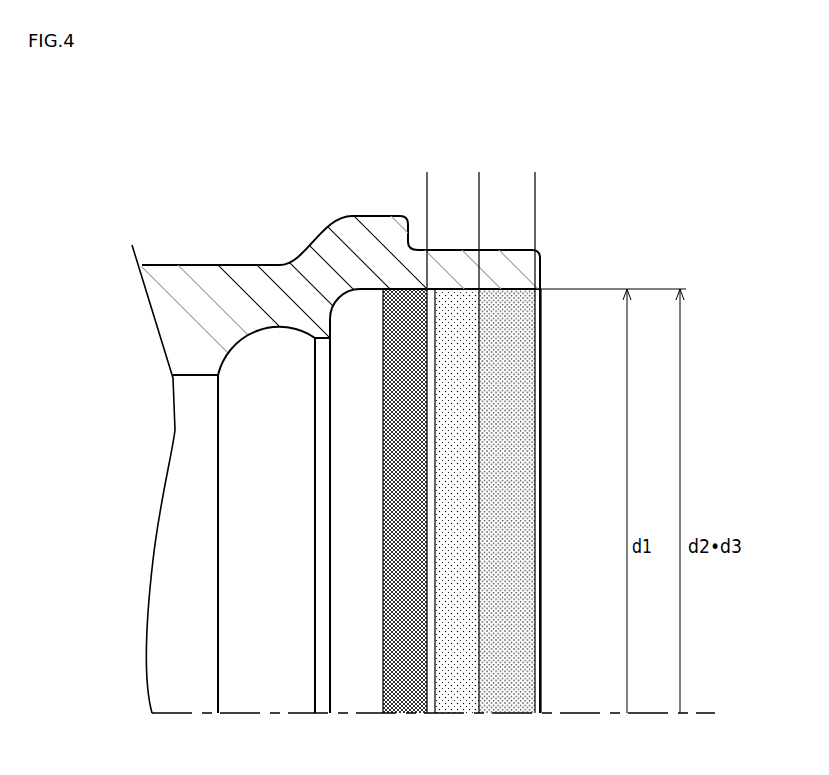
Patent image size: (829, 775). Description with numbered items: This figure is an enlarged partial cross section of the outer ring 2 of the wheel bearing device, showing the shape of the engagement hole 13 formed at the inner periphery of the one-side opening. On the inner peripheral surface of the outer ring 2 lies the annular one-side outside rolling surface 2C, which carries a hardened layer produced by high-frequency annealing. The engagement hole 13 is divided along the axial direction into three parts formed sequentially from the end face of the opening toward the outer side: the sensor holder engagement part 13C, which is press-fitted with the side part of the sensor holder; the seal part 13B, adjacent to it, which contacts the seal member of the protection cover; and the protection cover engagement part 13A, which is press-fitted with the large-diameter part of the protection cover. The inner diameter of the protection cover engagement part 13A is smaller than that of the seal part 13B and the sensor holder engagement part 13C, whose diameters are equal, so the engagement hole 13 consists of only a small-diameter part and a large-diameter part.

The outer ring 2 is at (217, 189).
The one-side outside rolling surface 2C is at (258, 336).
The engagement hole 13 is at (497, 427).
The protection cover engagement part 13A is at (383, 289).
The seal part 13B is at (479, 172).
The sensor holder engagement part 13C is at (535, 172).